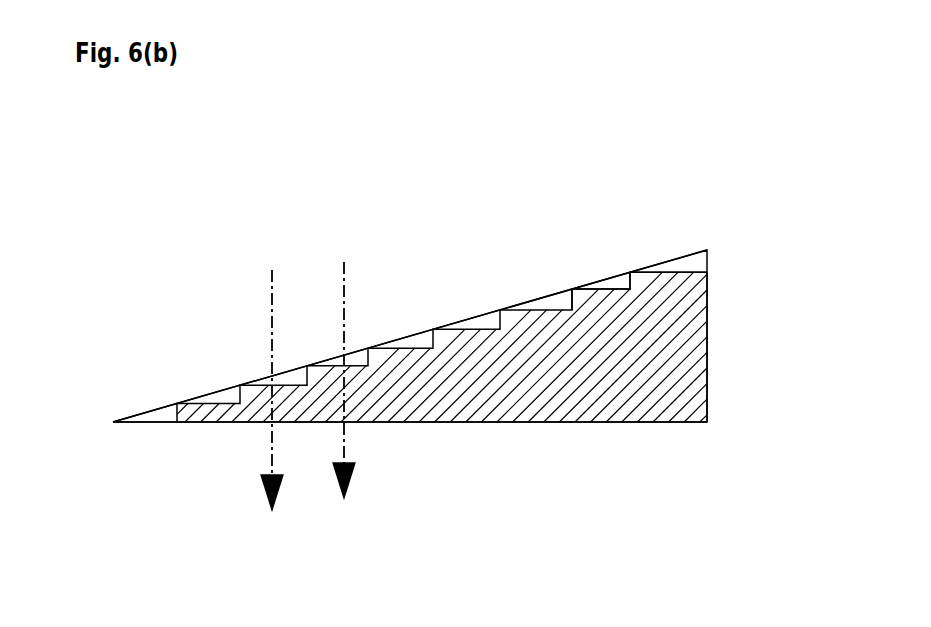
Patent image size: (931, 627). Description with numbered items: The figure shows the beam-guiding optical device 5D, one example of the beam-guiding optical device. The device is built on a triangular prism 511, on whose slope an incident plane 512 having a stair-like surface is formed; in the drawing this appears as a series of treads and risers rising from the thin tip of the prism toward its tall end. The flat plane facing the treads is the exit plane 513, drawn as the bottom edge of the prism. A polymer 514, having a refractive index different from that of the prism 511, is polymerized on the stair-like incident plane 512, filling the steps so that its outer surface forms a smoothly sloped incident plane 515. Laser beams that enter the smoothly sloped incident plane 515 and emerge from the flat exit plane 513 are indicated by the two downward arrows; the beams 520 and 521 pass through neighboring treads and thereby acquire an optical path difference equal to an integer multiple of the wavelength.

The beam-guiding optical device 5D is at (723, 321).
The triangular prism 511 is at (707, 382).
The incident plane 512 is at (472, 319).
The exit plane 513 is at (502, 422).
The polymer 514 is at (708, 263).
The smoothly sloped incident plane 515 is at (606, 280).
The beam passing through a tread 520 is at (275, 406).
The beam passing through a neighboring tread 521 is at (350, 400).